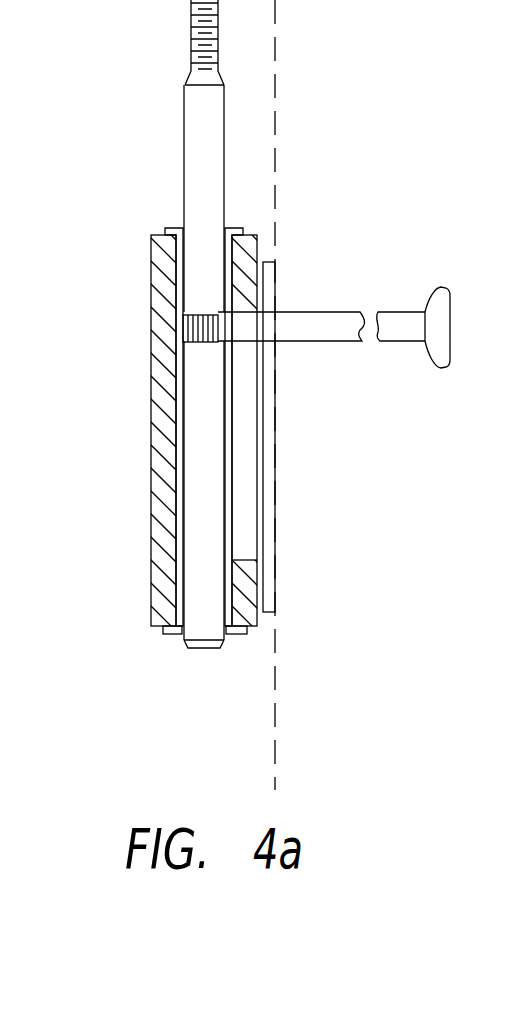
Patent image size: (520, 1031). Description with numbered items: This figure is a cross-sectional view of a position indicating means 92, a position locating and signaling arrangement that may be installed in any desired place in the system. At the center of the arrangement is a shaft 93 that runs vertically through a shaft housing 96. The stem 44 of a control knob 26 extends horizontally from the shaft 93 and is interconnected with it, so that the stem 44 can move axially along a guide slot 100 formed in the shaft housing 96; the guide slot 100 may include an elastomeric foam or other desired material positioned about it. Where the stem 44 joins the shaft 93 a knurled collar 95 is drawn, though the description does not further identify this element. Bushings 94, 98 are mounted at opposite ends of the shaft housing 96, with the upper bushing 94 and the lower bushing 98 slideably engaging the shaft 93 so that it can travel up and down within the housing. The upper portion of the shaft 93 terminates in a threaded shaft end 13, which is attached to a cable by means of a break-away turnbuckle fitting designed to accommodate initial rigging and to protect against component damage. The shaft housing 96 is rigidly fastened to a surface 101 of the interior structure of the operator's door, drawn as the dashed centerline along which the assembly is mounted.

The position indicating means 92 is at (110, 94).
The shaft end 13 is at (191, 58).
The shaft 93 is at (200, 162).
The bushing 94 is at (168, 228).
The knurled collar 95 is at (184, 348).
The shaft housing 96 is at (152, 497).
The bushing 98 is at (166, 634).
The guide slot 100 is at (247, 461).
The surface 101 is at (277, 80).
The stem 44 is at (311, 312).
The control knob 26 is at (452, 309).